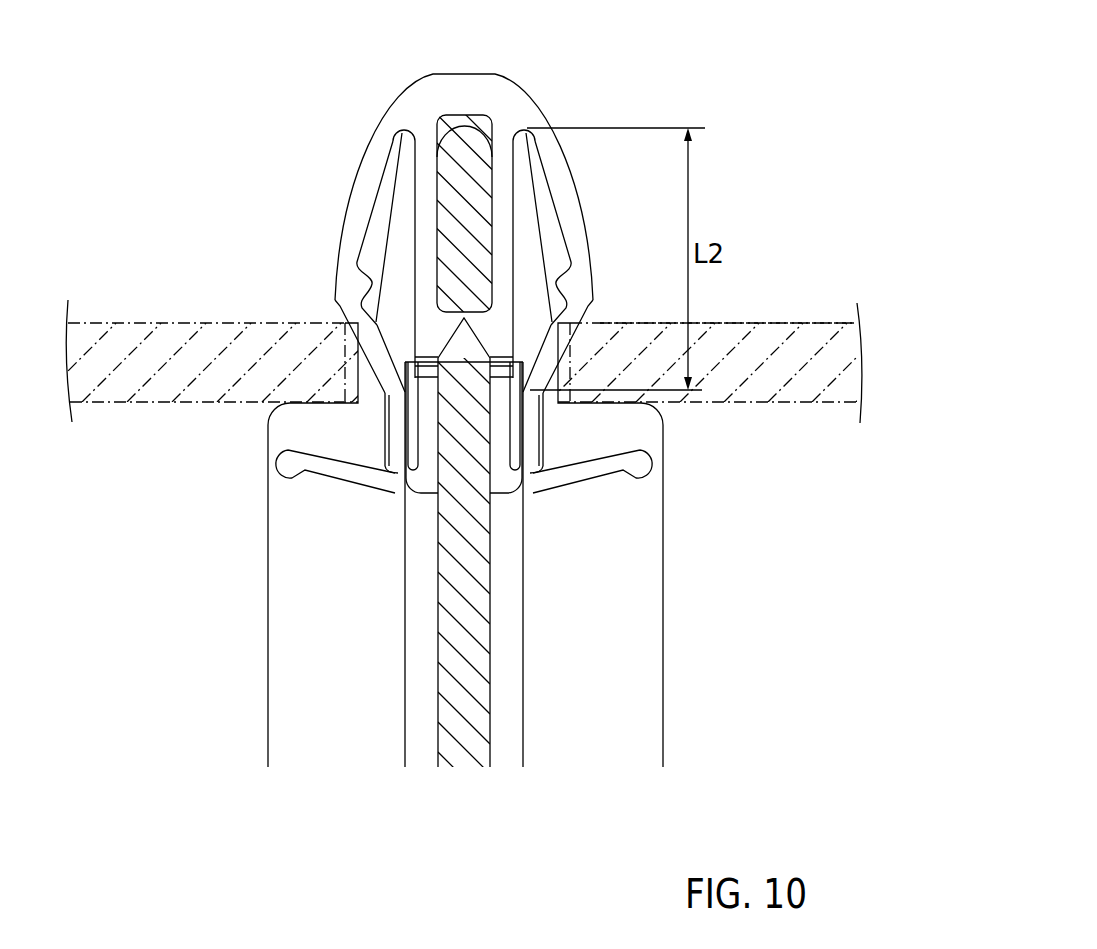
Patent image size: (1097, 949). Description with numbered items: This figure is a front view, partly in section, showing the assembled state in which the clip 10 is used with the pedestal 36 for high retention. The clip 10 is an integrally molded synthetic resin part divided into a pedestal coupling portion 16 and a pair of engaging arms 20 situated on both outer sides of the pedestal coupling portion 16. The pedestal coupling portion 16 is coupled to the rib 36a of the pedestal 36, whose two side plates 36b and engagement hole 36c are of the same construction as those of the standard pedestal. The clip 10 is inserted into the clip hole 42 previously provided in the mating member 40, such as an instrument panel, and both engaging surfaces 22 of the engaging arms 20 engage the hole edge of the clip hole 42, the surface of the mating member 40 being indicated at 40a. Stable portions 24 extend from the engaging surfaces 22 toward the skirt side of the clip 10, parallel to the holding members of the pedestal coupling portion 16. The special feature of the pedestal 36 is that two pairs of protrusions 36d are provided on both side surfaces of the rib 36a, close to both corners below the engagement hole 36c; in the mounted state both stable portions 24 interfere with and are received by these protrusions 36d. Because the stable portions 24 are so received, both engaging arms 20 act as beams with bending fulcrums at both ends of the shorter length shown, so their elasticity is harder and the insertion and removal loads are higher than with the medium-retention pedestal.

The clip 10 is at (362, 85).
The pedestal coupling portion 16 is at (394, 236).
The engaging arms 20 is at (362, 168).
The engaging surfaces 22 is at (345, 342).
The stable portions 24 is at (388, 432).
The pedestal for high retention 36 is at (226, 653).
The rib 36a is at (468, 147).
The side plates 36b is at (660, 618).
The engagement hole 36c is at (468, 348).
The protrusions 36d is at (413, 582).
The mating member 40 is at (106, 404).
The panel surface 40a is at (776, 316).
The clip hole 42 is at (340, 395).